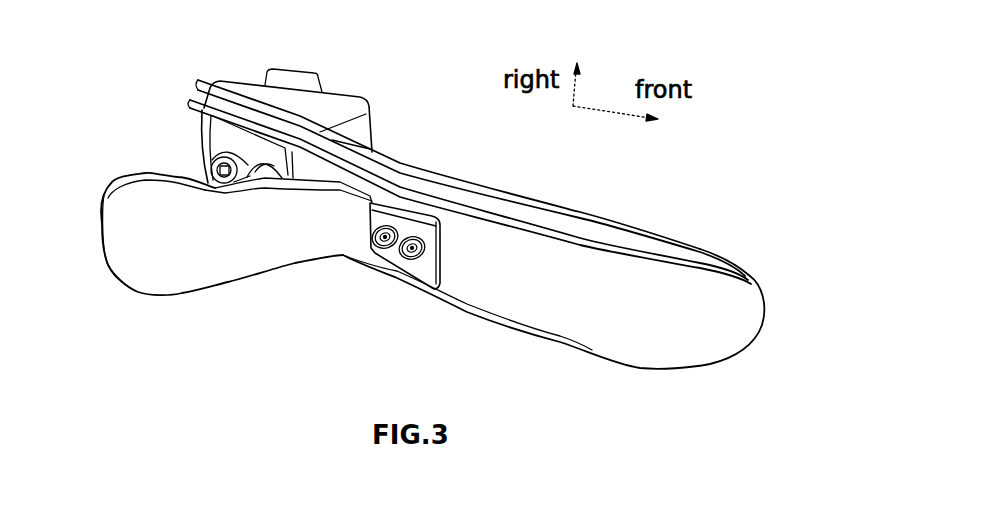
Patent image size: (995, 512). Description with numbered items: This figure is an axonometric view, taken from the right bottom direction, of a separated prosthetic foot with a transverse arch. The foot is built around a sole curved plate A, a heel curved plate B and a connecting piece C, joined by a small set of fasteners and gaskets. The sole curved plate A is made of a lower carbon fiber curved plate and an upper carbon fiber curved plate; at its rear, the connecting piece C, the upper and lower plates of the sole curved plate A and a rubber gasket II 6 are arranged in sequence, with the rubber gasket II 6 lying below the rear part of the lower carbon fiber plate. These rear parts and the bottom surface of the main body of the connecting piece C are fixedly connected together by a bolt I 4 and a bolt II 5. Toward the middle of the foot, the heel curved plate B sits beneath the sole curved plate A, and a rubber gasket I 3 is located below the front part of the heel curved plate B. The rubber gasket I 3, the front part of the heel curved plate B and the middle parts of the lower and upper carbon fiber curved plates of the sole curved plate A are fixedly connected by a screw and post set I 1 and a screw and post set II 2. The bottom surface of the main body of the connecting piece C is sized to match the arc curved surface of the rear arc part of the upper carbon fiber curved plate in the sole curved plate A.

The sole curved plate A is at (190, 100).
The heel curved plate B is at (137, 196).
The connecting piece C is at (333, 112).
The screw and post set I 1 is at (386, 233).
The screw and post set II 2 is at (413, 250).
The rubber gasket I 3 is at (399, 253).
The bolt I 4 is at (282, 263).
The bolt II 5 is at (207, 181).
The rubber gasket II 6 is at (222, 133).